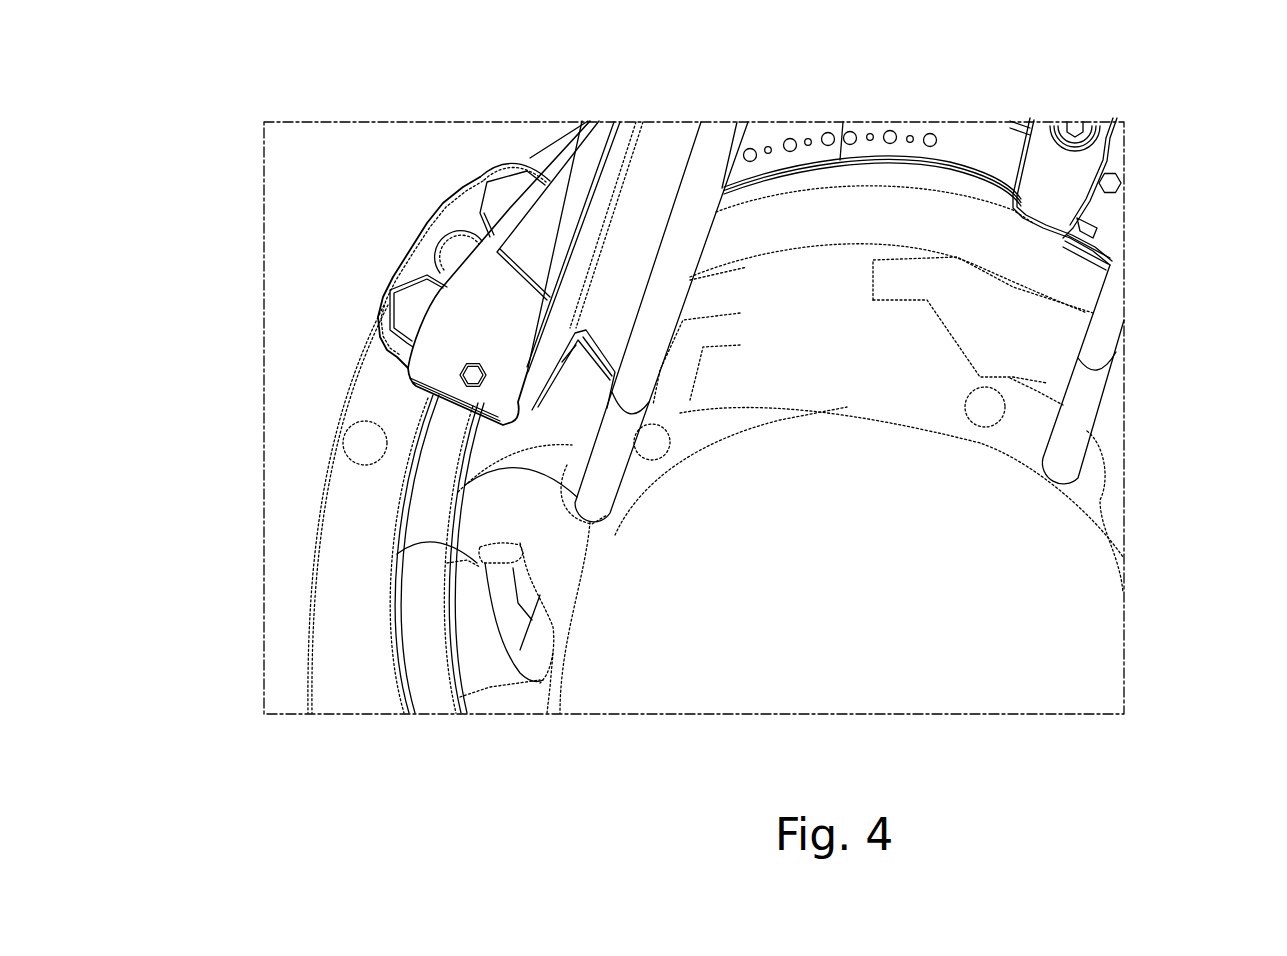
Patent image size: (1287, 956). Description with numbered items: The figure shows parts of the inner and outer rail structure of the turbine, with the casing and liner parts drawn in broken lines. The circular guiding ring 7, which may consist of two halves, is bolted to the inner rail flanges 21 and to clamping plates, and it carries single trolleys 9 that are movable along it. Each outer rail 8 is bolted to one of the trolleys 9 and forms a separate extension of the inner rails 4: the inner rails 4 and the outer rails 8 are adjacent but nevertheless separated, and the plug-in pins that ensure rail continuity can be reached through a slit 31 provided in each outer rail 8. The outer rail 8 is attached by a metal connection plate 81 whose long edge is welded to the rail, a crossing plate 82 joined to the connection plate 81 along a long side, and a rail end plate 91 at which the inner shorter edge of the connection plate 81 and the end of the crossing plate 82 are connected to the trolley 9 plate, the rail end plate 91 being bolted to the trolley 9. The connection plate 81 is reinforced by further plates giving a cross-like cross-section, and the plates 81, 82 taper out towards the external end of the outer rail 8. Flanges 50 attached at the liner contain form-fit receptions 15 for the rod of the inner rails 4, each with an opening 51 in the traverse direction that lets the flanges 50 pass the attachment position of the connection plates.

The inner rails 4 is at (603, 470).
The guiding ring 7 is at (417, 487).
The outer rails 8 is at (720, 151).
The trolleys 9 is at (413, 392).
The receptions 15 is at (493, 570).
The inner rail flanges 21 is at (430, 257).
The slit 31 is at (1122, 353).
The flanges 50 is at (490, 677).
The openings 51 is at (593, 444).
The connection plate 81 is at (670, 155).
The crossing plate 82 is at (603, 205).
The rail end plate 91 is at (480, 273).